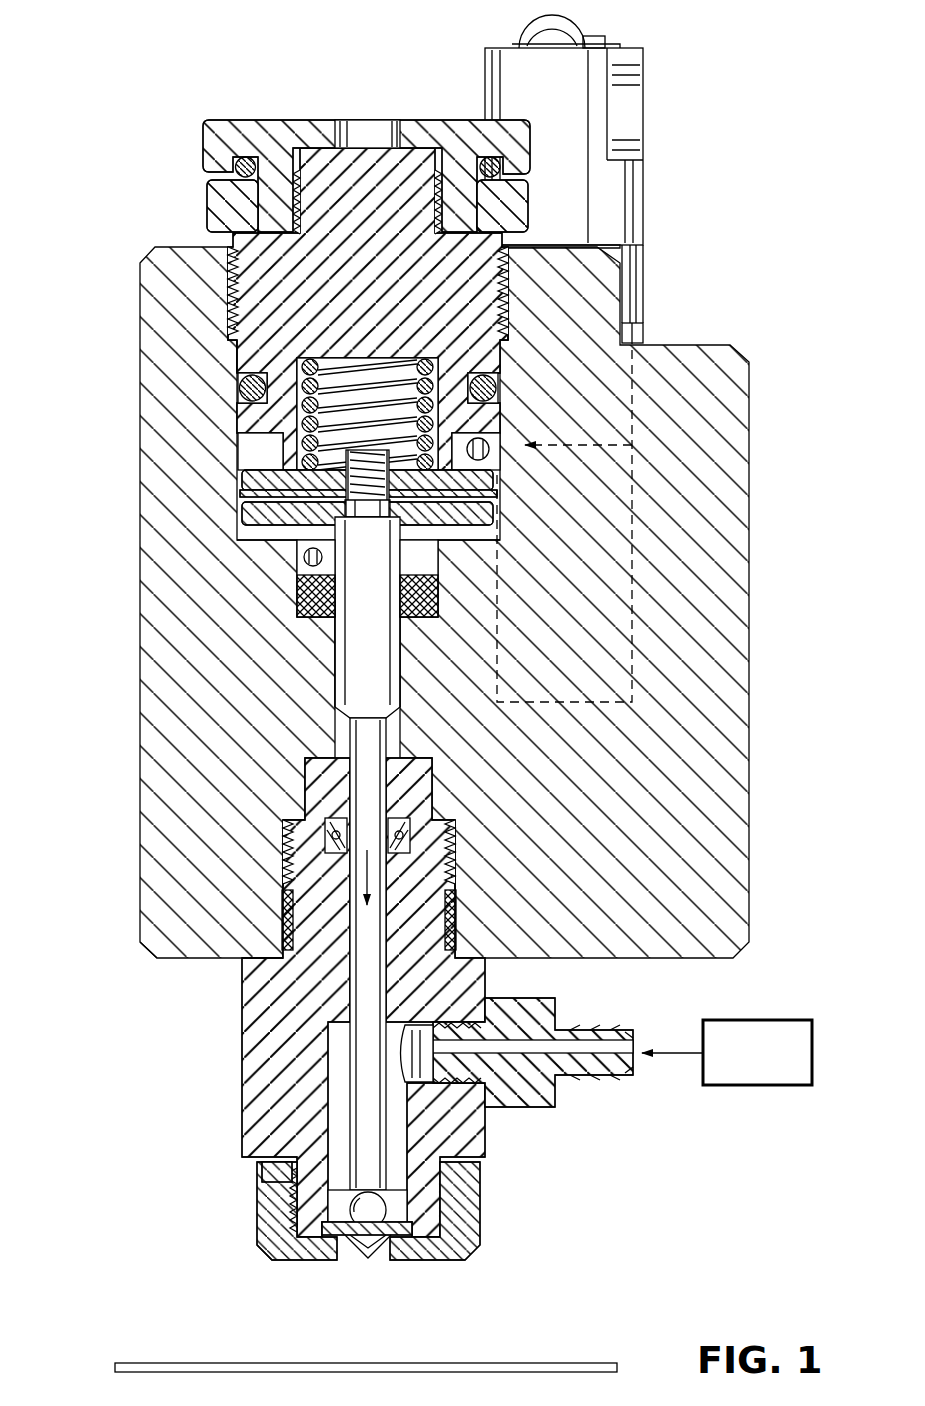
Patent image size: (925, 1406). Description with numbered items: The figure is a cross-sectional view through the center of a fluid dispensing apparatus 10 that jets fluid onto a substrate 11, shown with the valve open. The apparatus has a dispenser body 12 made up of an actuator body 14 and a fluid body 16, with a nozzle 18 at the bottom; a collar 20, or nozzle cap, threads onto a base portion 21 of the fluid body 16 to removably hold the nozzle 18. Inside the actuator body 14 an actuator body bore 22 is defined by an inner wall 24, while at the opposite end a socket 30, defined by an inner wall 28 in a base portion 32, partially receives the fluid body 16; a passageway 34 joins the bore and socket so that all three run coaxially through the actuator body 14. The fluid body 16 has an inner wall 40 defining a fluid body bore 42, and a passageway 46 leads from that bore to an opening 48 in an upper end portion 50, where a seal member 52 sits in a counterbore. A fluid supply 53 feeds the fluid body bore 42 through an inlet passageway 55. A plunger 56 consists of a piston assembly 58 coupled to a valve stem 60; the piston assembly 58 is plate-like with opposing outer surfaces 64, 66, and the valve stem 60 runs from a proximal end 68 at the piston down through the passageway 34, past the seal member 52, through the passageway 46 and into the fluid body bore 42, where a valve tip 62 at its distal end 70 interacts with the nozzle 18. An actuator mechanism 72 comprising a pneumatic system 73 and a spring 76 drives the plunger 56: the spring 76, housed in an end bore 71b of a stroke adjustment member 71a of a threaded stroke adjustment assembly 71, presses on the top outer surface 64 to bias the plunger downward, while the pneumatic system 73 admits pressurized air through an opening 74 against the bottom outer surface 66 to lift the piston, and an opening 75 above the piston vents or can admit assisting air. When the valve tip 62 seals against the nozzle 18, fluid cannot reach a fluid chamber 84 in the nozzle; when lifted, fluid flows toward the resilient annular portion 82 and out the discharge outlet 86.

The fluid dispensing apparatus 10 is at (762, 64).
The substrate 11 is at (152, 1362).
The dispenser body 12 is at (118, 524).
The actuator body 14 is at (140, 608).
The fluid body 16 is at (244, 1098).
The nozzle 18 is at (735, 693).
The collar 20 is at (257, 1222).
The base portion 21 is at (272, 1245).
The actuator body bore 22 is at (262, 403).
The inner wall 24 is at (262, 445).
The inner wall 28 is at (288, 965).
The socket 30 is at (285, 895).
The base portion 32 is at (157, 950).
The passageway 34 is at (392, 652).
The inner wall 40 is at (402, 1118).
The fluid body bore 42 is at (455, 1163).
The passageway 46 is at (395, 972).
The opening 48 is at (325, 840).
The upper end portion 50 is at (432, 835).
The seal member 52 is at (330, 840).
The fluid supply 53 is at (755, 1085).
The inlet passageway 55 is at (585, 1050).
The plunger 56 is at (336, 668).
The piston assembly 58 is at (497, 497).
The valve stem 60 is at (360, 1062).
The valve tip 62 is at (395, 1210).
The outer surface 64 is at (490, 478).
The outer surface 66 is at (485, 540).
The proximal end 68 is at (342, 640).
The distal end 70 is at (280, 1182).
The stroke adjustment assembly 71 is at (283, 114).
The stroke adjustment member 71a is at (488, 318).
The end bore 71b is at (255, 353).
The actuator mechanism 72 is at (652, 92).
The pneumatic system 73 is at (632, 187).
The opening 74 is at (313, 557).
The opening 75 is at (460, 462).
The spring 76 is at (330, 358).
The resilient annular portion 82 is at (338, 1240).
The fluid chamber 84 is at (386, 1240).
The discharge outlet 86 is at (368, 1252).